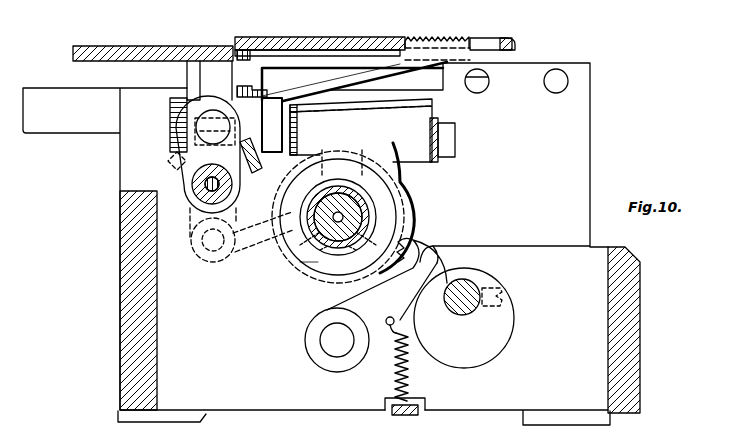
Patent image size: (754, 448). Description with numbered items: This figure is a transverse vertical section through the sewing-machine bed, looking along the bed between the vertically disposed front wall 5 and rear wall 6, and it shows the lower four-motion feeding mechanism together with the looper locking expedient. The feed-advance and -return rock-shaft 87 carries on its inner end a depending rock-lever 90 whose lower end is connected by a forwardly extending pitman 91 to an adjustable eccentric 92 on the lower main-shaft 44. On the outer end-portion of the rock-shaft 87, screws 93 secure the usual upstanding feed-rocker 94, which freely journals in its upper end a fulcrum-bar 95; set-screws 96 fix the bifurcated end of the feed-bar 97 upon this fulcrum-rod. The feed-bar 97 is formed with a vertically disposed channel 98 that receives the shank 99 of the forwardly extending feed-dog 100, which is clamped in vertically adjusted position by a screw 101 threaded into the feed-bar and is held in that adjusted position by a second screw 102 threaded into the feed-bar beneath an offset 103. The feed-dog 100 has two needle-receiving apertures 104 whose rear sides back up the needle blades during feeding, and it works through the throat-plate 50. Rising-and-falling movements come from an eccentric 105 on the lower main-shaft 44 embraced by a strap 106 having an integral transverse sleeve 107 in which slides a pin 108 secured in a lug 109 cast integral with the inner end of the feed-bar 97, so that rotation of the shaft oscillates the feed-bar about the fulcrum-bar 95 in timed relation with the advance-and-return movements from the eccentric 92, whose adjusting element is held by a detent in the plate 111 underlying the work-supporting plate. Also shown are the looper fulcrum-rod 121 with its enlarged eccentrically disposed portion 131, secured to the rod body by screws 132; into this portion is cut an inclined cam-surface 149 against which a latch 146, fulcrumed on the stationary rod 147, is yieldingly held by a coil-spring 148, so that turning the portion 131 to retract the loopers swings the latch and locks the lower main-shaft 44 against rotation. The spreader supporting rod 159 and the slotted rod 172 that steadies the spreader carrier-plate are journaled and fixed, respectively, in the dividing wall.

The front wall 5 is at (622, 287).
The rear wall 6 is at (130, 272).
The lower main-shaft 44 is at (345, 217).
The throat-plate 50 is at (352, 48).
The feed-advance and -return rock-shaft 87 is at (205, 190).
The rock-lever 90 is at (195, 235).
The pitman 91 is at (244, 250).
The adjustable eccentric 92 is at (318, 265).
The screws 93 is at (170, 165).
The feed-rocker 94 is at (190, 132).
The fulcrum-bar 95 is at (200, 119).
The set-screws 96 is at (205, 115).
The feed-bar 97 is at (232, 95).
The channel 98 is at (331, 80).
The shank 99 is at (318, 82).
The feed-dog 100 is at (430, 52).
The screw 101 is at (300, 126).
The screw 102 is at (248, 85).
The offset 103 is at (266, 97).
The needle-receiving apertures 104 is at (470, 40).
The eccentric 105 is at (380, 222).
The strap 106 is at (396, 200).
The transverse sleeve 107 is at (433, 118).
The pin 108 is at (446, 134).
The lug 109 is at (190, 97).
The plate 111 is at (143, 46).
The fulcrum-rod 121 is at (461, 305).
The enlarged eccentrically disposed portion 131 is at (497, 336).
The screws 132 is at (502, 290).
The latch 146 is at (400, 318).
The stationary rod 147 is at (330, 345).
The coil-spring 148 is at (394, 378).
The cam-surface 149 is at (452, 263).
The supporting rod 159 is at (489, 81).
The rod 172 is at (568, 81).